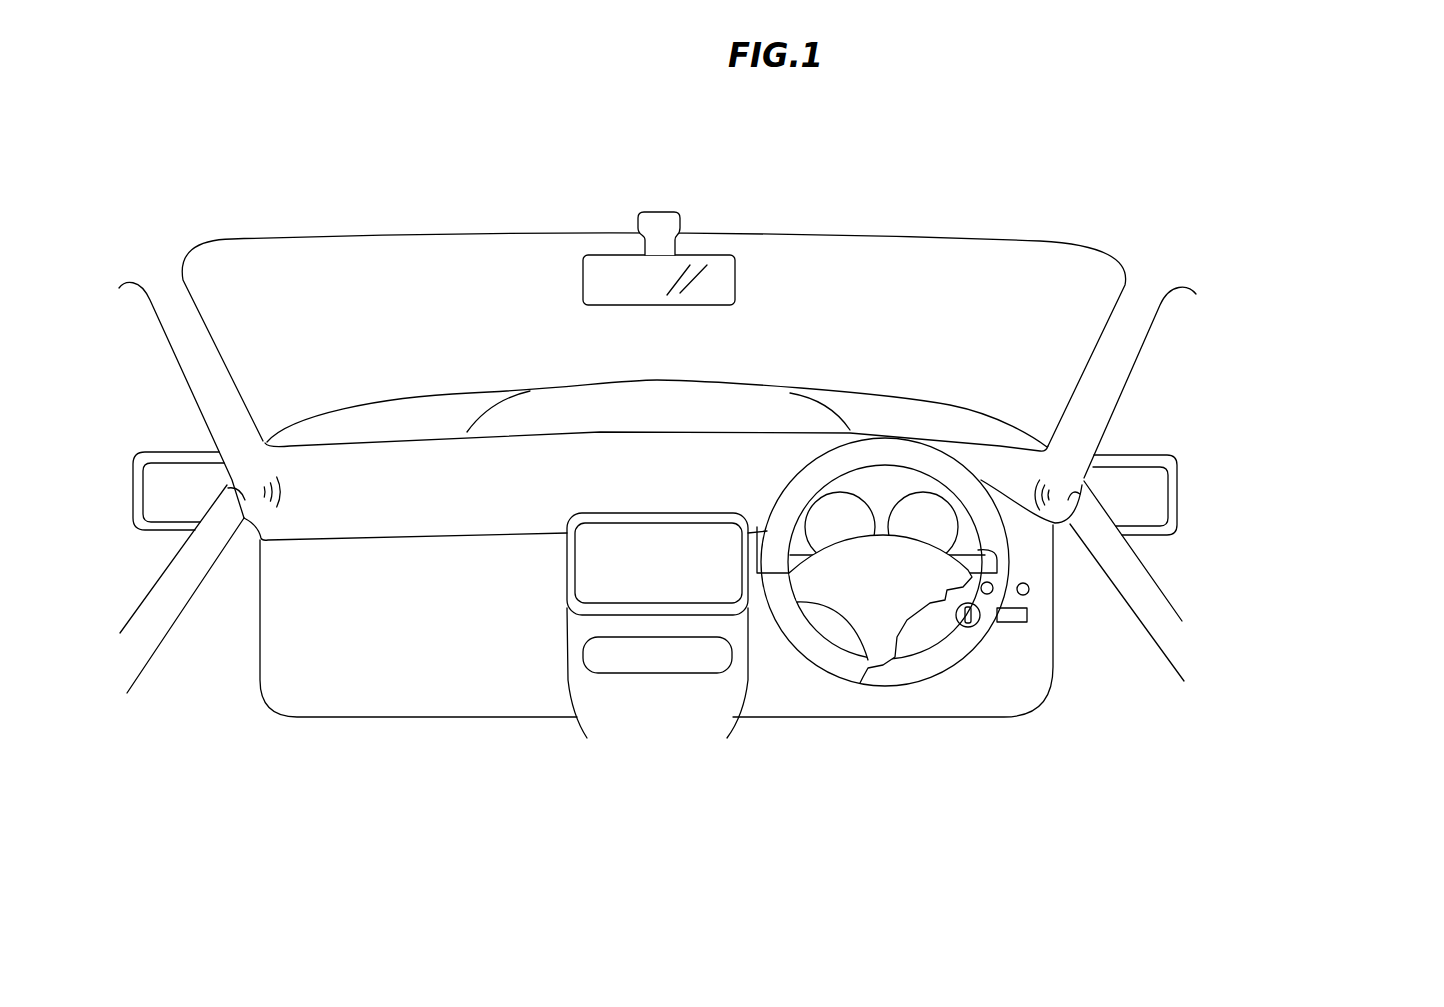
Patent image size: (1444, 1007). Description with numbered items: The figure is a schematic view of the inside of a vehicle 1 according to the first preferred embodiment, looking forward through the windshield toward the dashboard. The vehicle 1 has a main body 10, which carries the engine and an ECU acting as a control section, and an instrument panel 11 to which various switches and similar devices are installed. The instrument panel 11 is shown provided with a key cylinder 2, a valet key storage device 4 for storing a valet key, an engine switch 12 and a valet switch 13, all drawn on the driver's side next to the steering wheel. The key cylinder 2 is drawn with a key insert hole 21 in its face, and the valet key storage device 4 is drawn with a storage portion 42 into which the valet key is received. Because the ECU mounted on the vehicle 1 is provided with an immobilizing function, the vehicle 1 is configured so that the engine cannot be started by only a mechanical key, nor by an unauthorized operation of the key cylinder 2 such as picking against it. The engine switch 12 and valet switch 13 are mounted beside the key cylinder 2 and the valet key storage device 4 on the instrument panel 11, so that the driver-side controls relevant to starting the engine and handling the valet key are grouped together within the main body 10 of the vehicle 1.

The vehicle 1 is at (858, 214).
The main body 10 is at (1107, 387).
The instrument panel 11 is at (756, 704).
The key cylinder 2 is at (954, 634).
The key insert hole 21 is at (973, 627).
The engine switch 12 is at (993, 585).
The valet switch 13 is at (1029, 587).
The valet key storage device 4 is at (1017, 637).
The storage portion 42 is at (1028, 614).